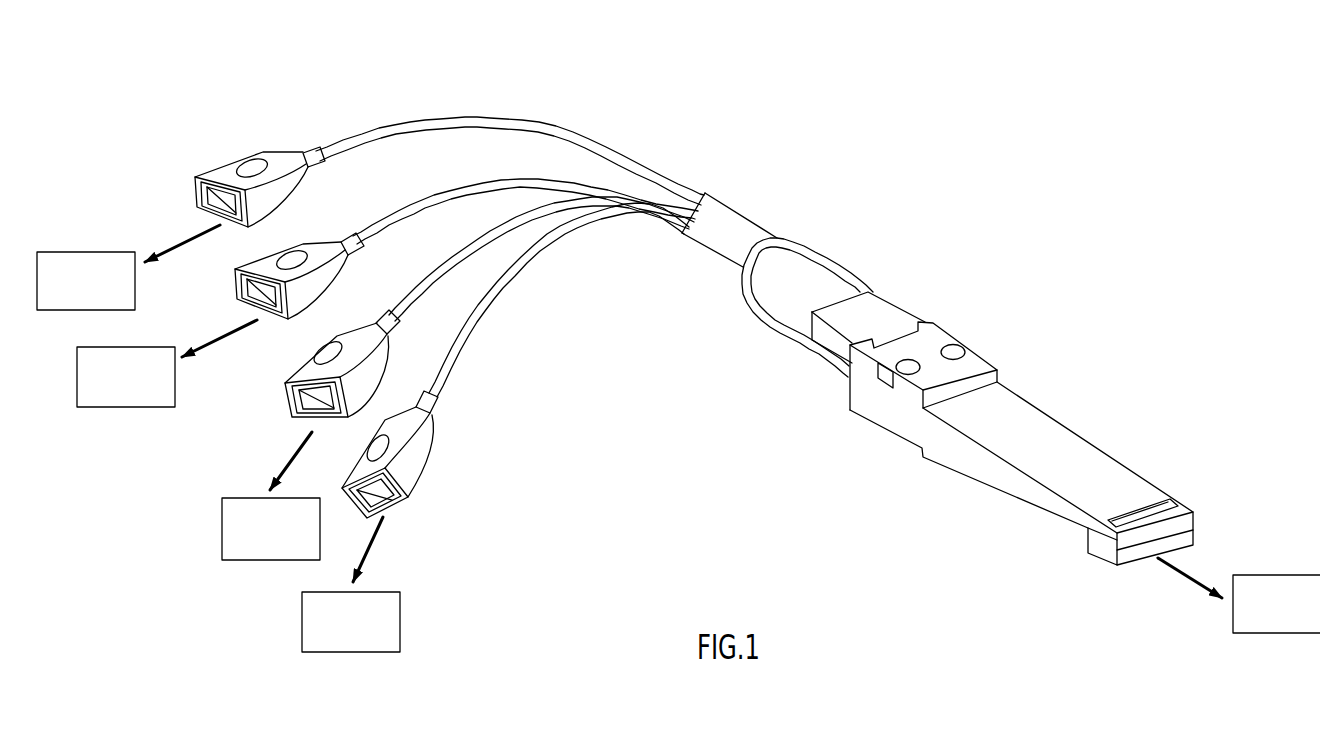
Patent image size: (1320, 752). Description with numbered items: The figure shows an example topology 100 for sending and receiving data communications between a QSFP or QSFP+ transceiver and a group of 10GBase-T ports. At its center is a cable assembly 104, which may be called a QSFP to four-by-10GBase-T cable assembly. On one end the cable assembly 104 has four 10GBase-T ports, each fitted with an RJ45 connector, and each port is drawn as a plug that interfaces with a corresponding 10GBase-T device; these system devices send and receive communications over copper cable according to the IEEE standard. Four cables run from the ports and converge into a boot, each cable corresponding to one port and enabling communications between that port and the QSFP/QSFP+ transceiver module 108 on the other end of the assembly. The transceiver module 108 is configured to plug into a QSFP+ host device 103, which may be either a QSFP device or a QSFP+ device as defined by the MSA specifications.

The topology 100 is at (706, 87).
The QSFP+ host device 103 is at (1282, 574).
The cable assembly 104 is at (742, 186).
The QSFP/QSFP+ transceiver module 108 is at (1070, 432).